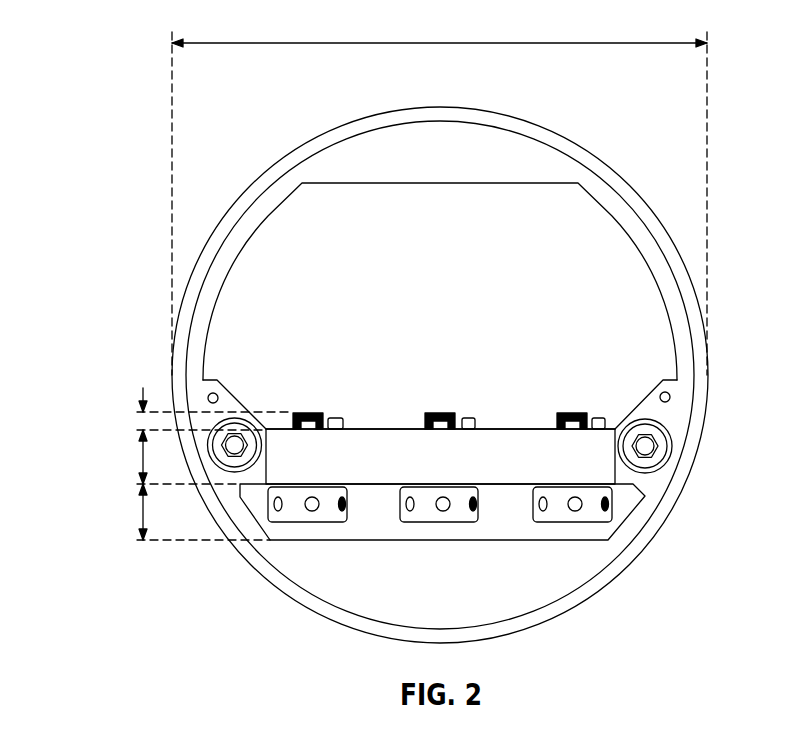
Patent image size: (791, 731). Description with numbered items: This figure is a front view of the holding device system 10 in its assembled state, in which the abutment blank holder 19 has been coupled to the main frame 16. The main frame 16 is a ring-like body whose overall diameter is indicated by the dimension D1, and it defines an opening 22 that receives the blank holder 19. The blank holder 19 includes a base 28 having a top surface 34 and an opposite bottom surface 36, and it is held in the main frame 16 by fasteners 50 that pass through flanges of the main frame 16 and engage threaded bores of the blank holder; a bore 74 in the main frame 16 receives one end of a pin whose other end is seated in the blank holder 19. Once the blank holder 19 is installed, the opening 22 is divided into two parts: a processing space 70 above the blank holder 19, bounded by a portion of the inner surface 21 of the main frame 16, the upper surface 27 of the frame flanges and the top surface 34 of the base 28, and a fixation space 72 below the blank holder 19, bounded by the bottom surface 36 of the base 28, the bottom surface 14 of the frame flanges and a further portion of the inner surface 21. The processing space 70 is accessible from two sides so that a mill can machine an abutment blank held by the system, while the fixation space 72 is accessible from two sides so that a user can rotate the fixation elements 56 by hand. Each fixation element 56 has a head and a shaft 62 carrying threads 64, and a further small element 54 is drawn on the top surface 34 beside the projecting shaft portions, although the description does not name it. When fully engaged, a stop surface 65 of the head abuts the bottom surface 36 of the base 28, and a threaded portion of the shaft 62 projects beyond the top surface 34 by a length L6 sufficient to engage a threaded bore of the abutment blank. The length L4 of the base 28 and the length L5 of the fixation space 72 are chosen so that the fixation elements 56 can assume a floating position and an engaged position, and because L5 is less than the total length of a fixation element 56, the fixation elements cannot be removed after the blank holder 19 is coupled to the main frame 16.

The holding device system 10 is at (99, 120).
The bottom surface of the flanges 14 is at (618, 578).
The main frame 16 is at (498, 631).
The abutment blank holder 19 is at (390, 428).
The inner surface of the main frame 21 is at (608, 208).
The opening 22 is at (583, 290).
The upper surface of the flanges 27 is at (653, 397).
The base 28 is at (341, 412).
The top surface of the base 34 is at (535, 429).
The bottom surface of the base 36 is at (517, 484).
The fastener 50 is at (657, 452).
The second connector 54 is at (474, 425).
The fixation element 56 is at (396, 503).
The shaft 62 is at (560, 413).
The threads 64 is at (430, 414).
The stop surface 65 is at (645, 496).
The processing space 70 is at (317, 268).
The fixation space 72 is at (307, 532).
The bore 74 is at (683, 402).
The diameter D1 is at (462, 42).
The length of the base L4 is at (142, 458).
The length of the fixation space L5 is at (142, 512).
The length of the shaft portion extending beyond the top surface L6 is at (142, 394).